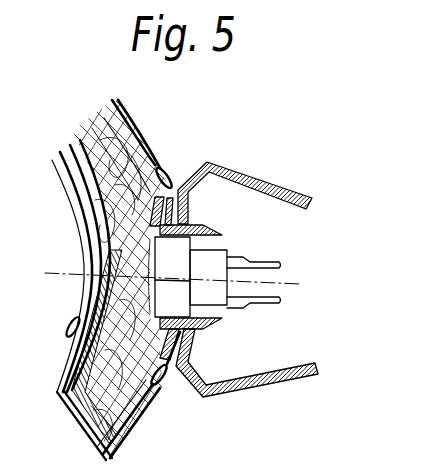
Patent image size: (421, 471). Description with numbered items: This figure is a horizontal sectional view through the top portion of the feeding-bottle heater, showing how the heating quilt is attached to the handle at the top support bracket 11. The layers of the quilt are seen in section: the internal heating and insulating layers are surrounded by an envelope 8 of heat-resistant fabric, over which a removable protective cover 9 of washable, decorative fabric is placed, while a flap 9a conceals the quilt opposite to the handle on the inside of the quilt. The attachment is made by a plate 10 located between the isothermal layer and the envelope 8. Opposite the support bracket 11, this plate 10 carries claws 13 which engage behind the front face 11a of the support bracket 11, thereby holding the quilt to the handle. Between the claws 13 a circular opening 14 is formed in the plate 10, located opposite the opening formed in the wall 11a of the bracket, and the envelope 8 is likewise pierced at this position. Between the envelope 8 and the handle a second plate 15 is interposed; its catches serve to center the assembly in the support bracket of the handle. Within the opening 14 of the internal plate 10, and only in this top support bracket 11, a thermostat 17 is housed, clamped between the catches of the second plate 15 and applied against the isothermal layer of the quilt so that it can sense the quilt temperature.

The envelope 8 is at (142, 144).
The protective cover 9 is at (137, 127).
The flap 9a is at (60, 380).
The plate 10 is at (87, 313).
The top support bracket 11 is at (270, 175).
The front face of support bracket 11a is at (191, 352).
The claws 13 is at (212, 222).
The circular opening 14 is at (236, 237).
The second plate 15 is at (176, 192).
The thermostat 17 is at (222, 303).